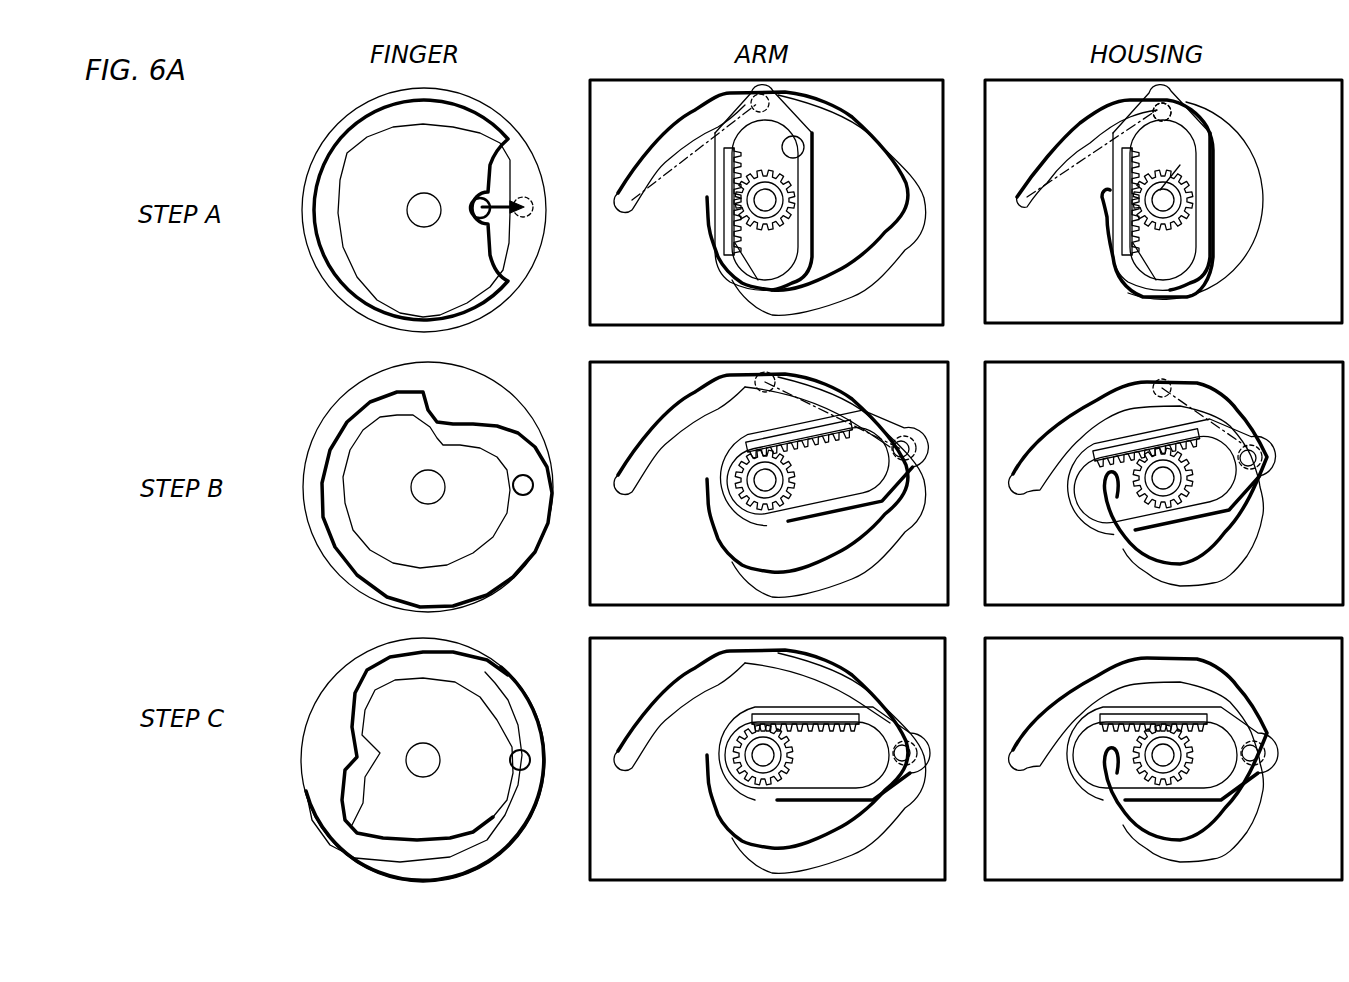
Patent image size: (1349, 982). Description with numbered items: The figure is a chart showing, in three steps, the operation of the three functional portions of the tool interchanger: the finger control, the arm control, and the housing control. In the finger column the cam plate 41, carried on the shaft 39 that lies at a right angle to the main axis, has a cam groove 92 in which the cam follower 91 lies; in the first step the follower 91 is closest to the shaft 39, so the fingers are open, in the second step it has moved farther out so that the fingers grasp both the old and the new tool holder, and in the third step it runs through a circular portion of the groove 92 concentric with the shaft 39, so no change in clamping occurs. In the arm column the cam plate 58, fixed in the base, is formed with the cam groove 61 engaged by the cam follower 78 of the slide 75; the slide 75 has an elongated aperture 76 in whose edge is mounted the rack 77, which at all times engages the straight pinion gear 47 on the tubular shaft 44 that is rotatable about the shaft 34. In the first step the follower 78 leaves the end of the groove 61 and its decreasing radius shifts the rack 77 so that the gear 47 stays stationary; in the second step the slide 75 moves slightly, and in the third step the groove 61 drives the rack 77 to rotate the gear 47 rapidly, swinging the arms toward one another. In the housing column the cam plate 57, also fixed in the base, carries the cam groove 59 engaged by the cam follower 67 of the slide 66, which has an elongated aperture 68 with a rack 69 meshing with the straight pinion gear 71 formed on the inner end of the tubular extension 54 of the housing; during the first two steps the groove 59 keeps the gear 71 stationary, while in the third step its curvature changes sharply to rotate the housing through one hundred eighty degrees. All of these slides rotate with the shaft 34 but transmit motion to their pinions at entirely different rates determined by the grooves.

The shaft 34 is at (765, 203).
The shaft 39 is at (425, 193).
The cam plate 41 is at (323, 283).
The tubular shaft 44 is at (782, 202).
The straight pinion gear 47 is at (758, 176).
The tubular extension 54 is at (1180, 165).
The cam plate 57 is at (1253, 323).
The cam plate 58 is at (908, 307).
The cam groove 59 is at (1257, 207).
The cam groove 61 is at (868, 135).
The slide 66 is at (1207, 247).
The cam follower 67 is at (1157, 103).
The elongated aperture 68 is at (1140, 273).
The rack 69 is at (1127, 230).
The straight pinion gear 71 is at (1157, 180).
The slide 75 is at (815, 233).
The elongated aperture 76 is at (803, 155).
The rack 77 is at (728, 228).
The cam follower 78 is at (772, 100).
The cam follower 91 is at (470, 212).
The cam groove 92 is at (482, 125).